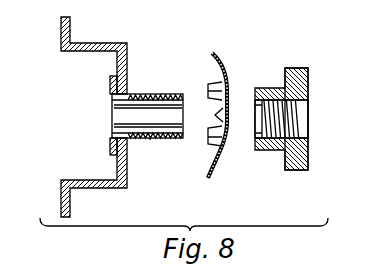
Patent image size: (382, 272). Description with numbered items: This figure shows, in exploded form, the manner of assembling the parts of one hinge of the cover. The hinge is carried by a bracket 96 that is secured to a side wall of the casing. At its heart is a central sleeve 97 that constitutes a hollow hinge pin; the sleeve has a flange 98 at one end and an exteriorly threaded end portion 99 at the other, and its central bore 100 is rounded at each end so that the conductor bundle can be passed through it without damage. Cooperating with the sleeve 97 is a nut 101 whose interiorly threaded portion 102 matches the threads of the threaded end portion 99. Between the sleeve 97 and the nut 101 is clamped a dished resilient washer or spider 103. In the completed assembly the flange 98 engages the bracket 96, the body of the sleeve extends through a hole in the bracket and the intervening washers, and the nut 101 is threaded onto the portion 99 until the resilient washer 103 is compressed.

The bracket 96 is at (127, 48).
The central sleeve 97 is at (139, 91).
The flange 98 is at (110, 83).
The exteriorly threaded end portion 99 is at (155, 139).
The central bore 100 is at (112, 121).
The nut 101 is at (303, 97).
The interiorly threaded portion 102 is at (318, 119).
The dished resilient washer 103 is at (232, 101).